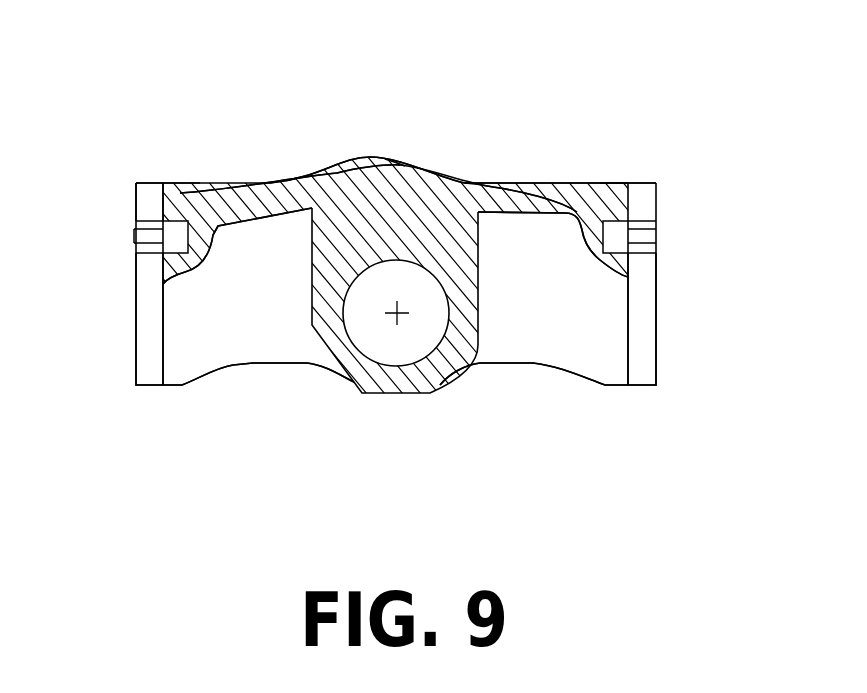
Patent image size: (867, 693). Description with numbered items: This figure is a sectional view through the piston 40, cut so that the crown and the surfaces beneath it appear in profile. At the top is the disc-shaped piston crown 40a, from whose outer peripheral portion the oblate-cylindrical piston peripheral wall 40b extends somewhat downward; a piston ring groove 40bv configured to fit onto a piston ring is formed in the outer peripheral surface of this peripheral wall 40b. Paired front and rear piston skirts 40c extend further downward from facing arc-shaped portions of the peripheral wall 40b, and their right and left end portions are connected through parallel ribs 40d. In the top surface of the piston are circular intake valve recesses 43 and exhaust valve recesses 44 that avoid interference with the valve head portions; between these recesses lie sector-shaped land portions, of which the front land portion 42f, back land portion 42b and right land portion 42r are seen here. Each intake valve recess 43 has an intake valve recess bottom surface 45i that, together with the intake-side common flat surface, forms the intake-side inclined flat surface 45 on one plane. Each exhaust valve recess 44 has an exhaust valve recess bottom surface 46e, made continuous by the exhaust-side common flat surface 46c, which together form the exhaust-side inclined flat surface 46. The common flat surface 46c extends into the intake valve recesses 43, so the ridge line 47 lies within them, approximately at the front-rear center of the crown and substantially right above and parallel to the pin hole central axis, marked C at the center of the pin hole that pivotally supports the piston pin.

The piston 40 is at (143, 153).
The piston crown 40a is at (136, 204).
The piston peripheral wall 40b is at (134, 236).
The piston ring groove 40bv is at (656, 222).
The piston skirt 40c is at (136, 357).
The rib 40d is at (253, 363).
The front land portion 42f is at (167, 192).
The right land portion 42r is at (370, 156).
The back land portion 42b is at (618, 183).
The intake valve recess 43 is at (562, 190).
The exhaust valve recess 44 is at (208, 192).
The intake-side inclined flat surface 45 is at (538, 142).
The intake valve recess bottom surface 45i is at (475, 185).
The exhaust-side inclined flat surface 46 is at (323, 63).
The exhaust valve recess bottom surface 46e is at (249, 190).
The exhaust-side common flat surface 46c is at (343, 172).
The ridge line 47 is at (400, 163).
The pin bore center axis C is at (397, 313).